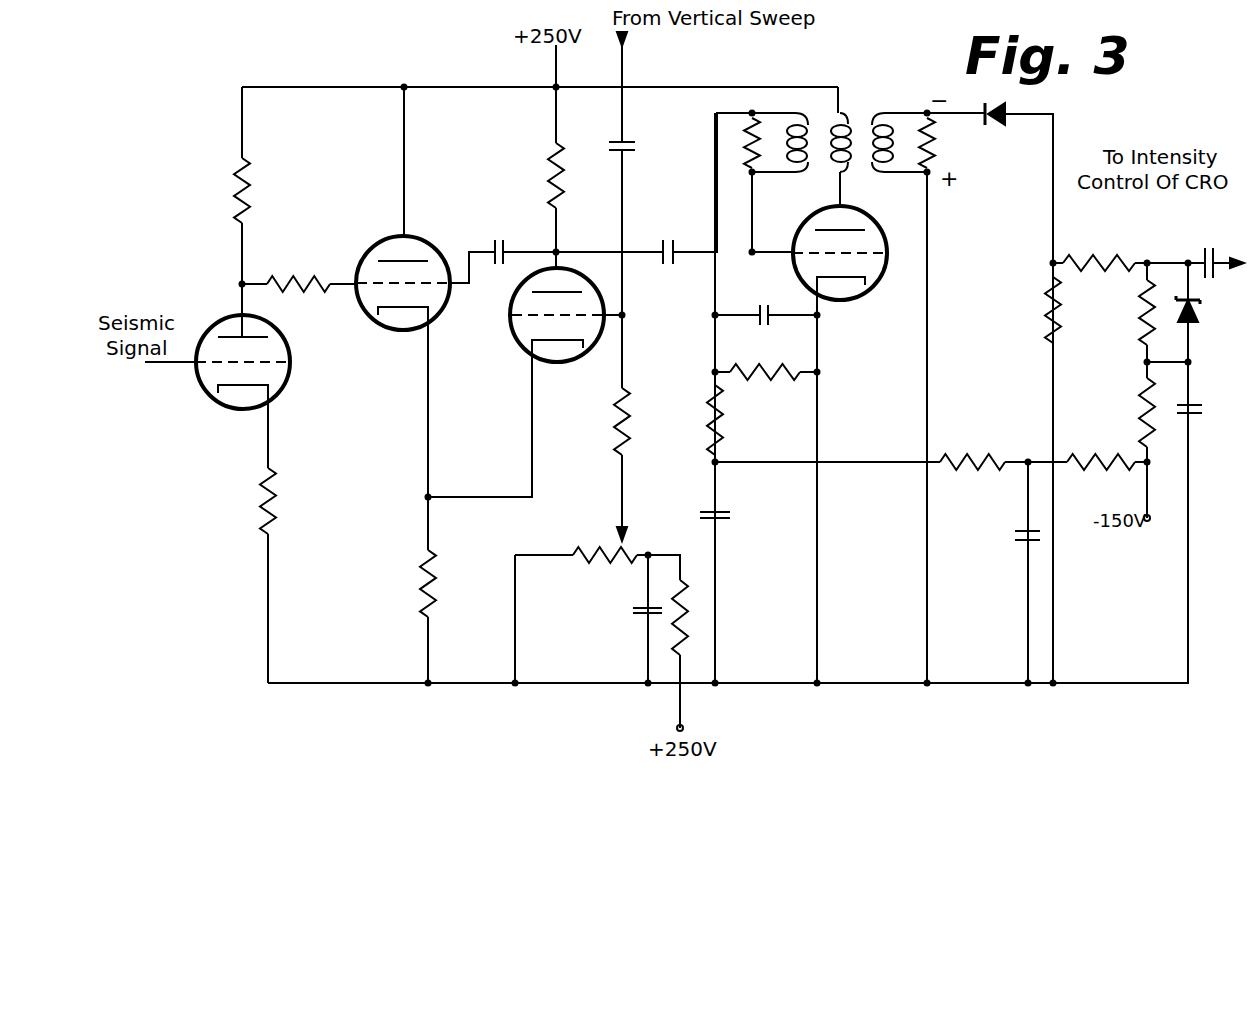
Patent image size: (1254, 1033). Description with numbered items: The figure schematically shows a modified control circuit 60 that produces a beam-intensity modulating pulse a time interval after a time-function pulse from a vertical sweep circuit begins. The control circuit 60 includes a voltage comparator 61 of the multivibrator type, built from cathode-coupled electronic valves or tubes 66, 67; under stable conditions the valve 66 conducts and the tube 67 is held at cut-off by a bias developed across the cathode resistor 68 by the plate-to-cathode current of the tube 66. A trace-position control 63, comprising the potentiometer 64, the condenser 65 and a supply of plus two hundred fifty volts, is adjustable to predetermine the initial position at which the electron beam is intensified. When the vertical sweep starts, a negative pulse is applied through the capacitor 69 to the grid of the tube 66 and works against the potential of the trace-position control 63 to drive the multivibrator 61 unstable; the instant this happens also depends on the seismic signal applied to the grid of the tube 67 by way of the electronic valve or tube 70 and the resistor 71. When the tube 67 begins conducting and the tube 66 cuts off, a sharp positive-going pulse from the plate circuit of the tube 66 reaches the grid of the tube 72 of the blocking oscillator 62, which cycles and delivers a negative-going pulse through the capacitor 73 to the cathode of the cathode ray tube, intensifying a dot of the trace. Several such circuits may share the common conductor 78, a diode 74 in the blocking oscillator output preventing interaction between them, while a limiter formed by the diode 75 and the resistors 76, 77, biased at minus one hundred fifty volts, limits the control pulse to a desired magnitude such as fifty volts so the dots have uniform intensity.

The control circuit 60 is at (530, 72).
The voltage comparator 61 is at (492, 388).
The blocking oscillator 62 is at (880, 383).
The trace-position control 63 is at (596, 536).
The potentiometer 64 is at (615, 557).
The condenser 65 is at (632, 611).
The electronic valve or tube 66 is at (518, 300).
The electronic valve or tube 67 is at (387, 330).
The cathode resistor 68 is at (437, 570).
The capacitor 69 is at (625, 141).
The electronic valve or tube 70 is at (212, 400).
The resistor 71 is at (298, 277).
The tube 72 is at (863, 295).
The capacitor 73 is at (1203, 255).
The diode 74 is at (1012, 110).
The diode 75 is at (1205, 316).
The resistor 76 is at (1140, 300).
The resistor 77 is at (1140, 396).
The conductor 78 is at (1050, 186).